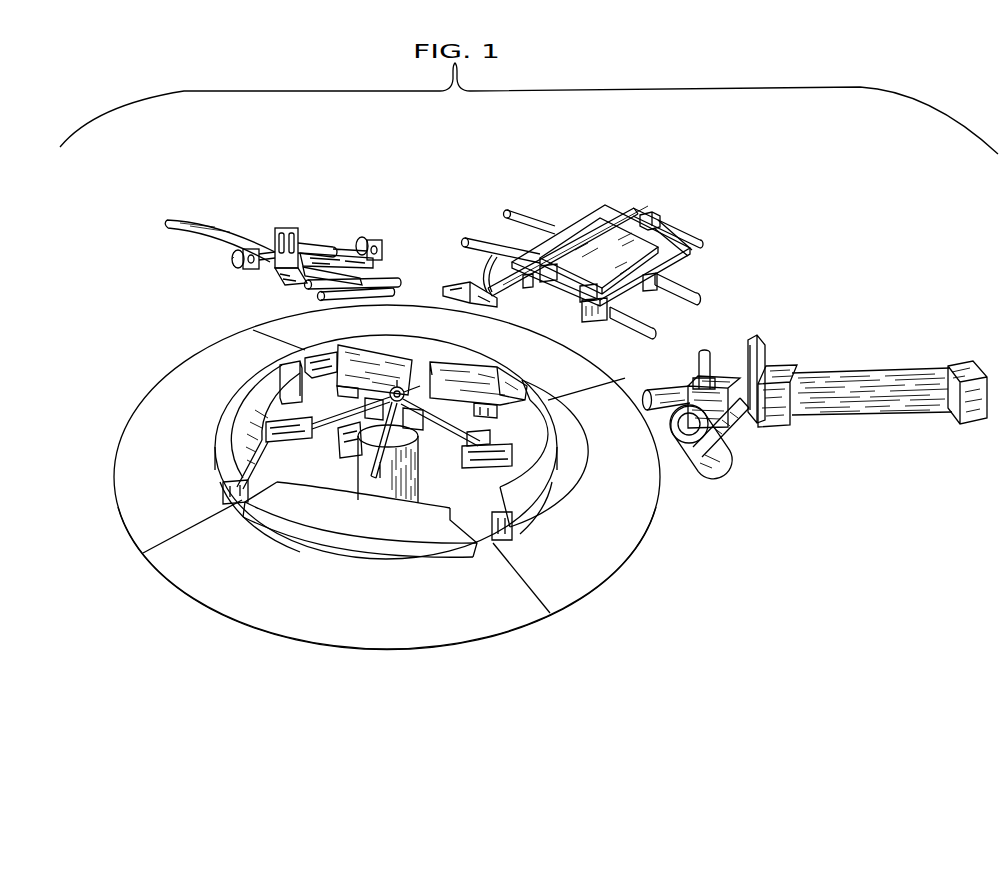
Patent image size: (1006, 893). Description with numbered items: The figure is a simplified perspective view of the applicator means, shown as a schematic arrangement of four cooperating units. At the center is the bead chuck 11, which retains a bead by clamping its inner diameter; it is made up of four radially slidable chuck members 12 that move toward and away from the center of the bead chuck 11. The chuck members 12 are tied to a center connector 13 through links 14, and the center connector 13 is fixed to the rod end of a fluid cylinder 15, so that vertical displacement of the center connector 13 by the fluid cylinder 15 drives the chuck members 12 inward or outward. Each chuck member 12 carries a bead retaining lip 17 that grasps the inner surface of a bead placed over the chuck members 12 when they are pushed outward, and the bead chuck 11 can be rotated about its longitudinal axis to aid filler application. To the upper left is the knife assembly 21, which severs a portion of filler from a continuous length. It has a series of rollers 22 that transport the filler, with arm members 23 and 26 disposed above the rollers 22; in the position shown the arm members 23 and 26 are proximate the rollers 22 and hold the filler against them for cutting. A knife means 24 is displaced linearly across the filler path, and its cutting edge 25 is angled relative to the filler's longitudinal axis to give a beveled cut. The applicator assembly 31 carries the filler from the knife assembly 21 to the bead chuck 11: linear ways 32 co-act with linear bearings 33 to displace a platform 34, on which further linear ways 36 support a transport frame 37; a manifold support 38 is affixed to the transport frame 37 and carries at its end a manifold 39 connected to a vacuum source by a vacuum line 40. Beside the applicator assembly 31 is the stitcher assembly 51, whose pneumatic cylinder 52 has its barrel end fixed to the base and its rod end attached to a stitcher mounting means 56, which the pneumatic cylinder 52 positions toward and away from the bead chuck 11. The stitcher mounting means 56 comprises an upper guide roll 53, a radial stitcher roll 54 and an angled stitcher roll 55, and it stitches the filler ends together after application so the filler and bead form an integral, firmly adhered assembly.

The bead chuck 11 is at (662, 545).
The chuck members 12 is at (146, 458).
The center connector 13 is at (394, 388).
The links 14 is at (335, 455).
The fluid cylinder 15 is at (405, 468).
The bead retaining lip 17 is at (520, 448).
The knife assembly 21 is at (301, 230).
The rollers 22 is at (392, 278).
The arm member 23 is at (368, 240).
The knife means 24 is at (288, 228).
The cutting edge 25 is at (293, 283).
The arm member 26 is at (240, 270).
The applicator assembly 31 is at (579, 249).
The linear ways 32 is at (700, 293).
The linear bearings 33 is at (700, 270).
The platform 34 is at (605, 212).
The linear ways 36 is at (622, 218).
The transport frame 37 is at (588, 243).
The manifold support 38 is at (510, 283).
The manifold 39 is at (445, 290).
The vacuum line 40 is at (490, 255).
The stitcher assembly 51 is at (790, 405).
The pneumatic cylinder 52 is at (912, 383).
The upper guide roll 53 is at (668, 387).
The radial stitcher roll 54 is at (678, 424).
The angled stitcher roll 55 is at (708, 465).
The stitcher mounting means 56 is at (760, 438).